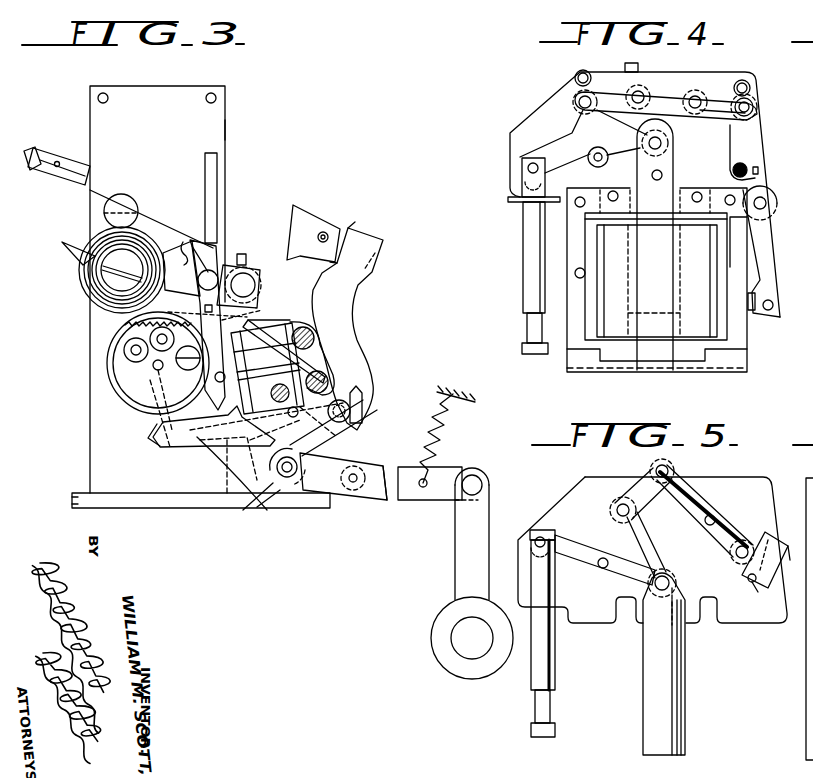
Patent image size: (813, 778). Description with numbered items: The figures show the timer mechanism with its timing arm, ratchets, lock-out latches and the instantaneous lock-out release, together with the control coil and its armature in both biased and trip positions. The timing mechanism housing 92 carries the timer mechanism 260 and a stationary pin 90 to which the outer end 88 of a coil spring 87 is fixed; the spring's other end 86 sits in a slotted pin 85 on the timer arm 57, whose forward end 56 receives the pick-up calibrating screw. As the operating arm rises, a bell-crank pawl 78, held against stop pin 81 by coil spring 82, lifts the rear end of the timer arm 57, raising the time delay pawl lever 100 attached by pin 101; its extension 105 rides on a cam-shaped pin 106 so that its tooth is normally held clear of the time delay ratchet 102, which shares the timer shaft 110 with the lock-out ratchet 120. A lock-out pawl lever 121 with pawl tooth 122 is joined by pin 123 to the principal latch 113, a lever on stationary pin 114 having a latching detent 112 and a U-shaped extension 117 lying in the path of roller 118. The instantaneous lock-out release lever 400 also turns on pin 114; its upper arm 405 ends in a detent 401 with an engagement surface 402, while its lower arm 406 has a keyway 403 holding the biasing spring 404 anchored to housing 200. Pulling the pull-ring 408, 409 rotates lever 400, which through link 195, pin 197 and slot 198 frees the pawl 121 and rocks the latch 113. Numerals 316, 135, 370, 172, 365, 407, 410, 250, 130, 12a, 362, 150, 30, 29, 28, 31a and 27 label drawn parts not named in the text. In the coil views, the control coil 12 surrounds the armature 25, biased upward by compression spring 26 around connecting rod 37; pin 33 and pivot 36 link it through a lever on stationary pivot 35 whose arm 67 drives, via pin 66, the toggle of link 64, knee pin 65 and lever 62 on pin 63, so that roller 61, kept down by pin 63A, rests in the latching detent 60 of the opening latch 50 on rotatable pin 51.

In FIG. 3, the timing mechanism housing 92 is at (168, 76).
In FIG. 3, the timer mechanism 260 is at (234, 116).
In FIG. 3, the slot 316 is at (214, 170).
In FIG. 3, the handle 135 is at (62, 153).
In FIG. 3, the stationary pin 90 is at (126, 200).
In FIG. 3, the outer end of coil spring 88 is at (104, 213).
In FIG. 3, the forward end of timer arm 56 is at (62, 243).
In FIG. 3, the coil spring 87 is at (80, 274).
In FIG. 3, the end of coil spring 86 is at (118, 276).
In FIG. 3, the slotted pin 85 is at (124, 286).
In FIG. 3, the timer arm 57 is at (190, 283).
In FIG. 3, the stationary pin 63 is at (175, 246).
In FIG. 4, the stationary pin 63 is at (696, 97).
In FIG. 5, the stationary pin 63 is at (716, 520).
In FIG. 3, the time delay pawl lever 100 is at (208, 243).
In FIG. 3, the pin 101 is at (216, 262).
In FIG. 3, the stud 370 is at (248, 257).
In FIG. 3, the detent 401 is at (206, 307).
In FIG. 3, the time delay toothed ratchet 102 is at (130, 327).
In FIG. 3, the lock-out ratchet 120 is at (110, 364).
In FIG. 3, the timer shaft 110 is at (155, 367).
In FIG. 3, the pin 106 is at (176, 400).
In FIG. 3, the pawl tooth 122 is at (160, 421).
In FIG. 3, the lock-out pawl lever 121 is at (158, 443).
In FIG. 3, the upper arm 405 is at (219, 473).
In FIG. 3, the base bar 172 is at (124, 507).
In FIG. 3, the lever 365 is at (262, 492).
In FIG. 3, the pivot 407 is at (284, 480).
In FIG. 3, the stationary pin 114 is at (289, 474).
In FIG. 3, the link 195 is at (338, 462).
In FIG. 3, the instantaneous lock-out release lever 400 is at (361, 511).
In FIG. 3, the lower arm 406 is at (384, 500).
In FIG. 3, the hole or keyway 403 is at (414, 500).
In FIG. 3, the biasing spring 404 is at (452, 418).
In FIG. 3, the housing 200 is at (478, 382).
In FIG. 3, the pivot 410 is at (474, 478).
In FIG. 3, the pull-ring 408 is at (457, 555).
In FIG. 3, the pull-ring 409 is at (452, 640).
In FIG. 3, the pin 123 is at (352, 408).
In FIG. 3, the U-shaped extension 117 is at (305, 212).
In FIG. 3, the lever assembly 250 is at (355, 222).
In FIG. 3, the latching detent 112 is at (322, 273).
In FIG. 3, the principal latch 113 is at (356, 308).
In FIG. 3, the roller 118 is at (260, 288).
In FIG. 3, the engagement surface 402 is at (260, 305).
In FIG. 3, the pawl 78 is at (274, 326).
In FIG. 3, the compression spring 26 is at (314, 337).
In FIG. 3, the coil spring 82 is at (325, 362).
In FIG. 3, the stop pin 81 is at (328, 382).
In FIG. 3, the block 130 is at (268, 358).
In FIG. 3, the extension 105 is at (269, 371).
In FIG. 3, the pin 12a is at (271, 391).
In FIG. 3, the slot 198 is at (288, 410).
In FIG. 3, the pin 197 is at (275, 425).
In FIG. 4, the frame 362 is at (552, 141).
In FIG. 5, the frame 362 is at (574, 494).
In FIG. 4, the upwardly extending arm 67 is at (585, 123).
In FIG. 4, the link 64 is at (604, 92).
In FIG. 4, the tab 150 is at (638, 65).
In FIG. 4, the pin 66 is at (580, 99).
In FIG. 5, the pin 66 is at (617, 509).
In FIG. 4, the knee pin 65 is at (641, 96).
In FIG. 5, the knee pin 65 is at (670, 470).
In FIG. 4, the lever 62 is at (715, 104).
In FIG. 5, the lever 62 is at (700, 503).
In FIG. 4, the pin 63A is at (750, 88).
In FIG. 4, the roller 61 is at (756, 108).
In FIG. 5, the roller 61 is at (745, 545).
In FIG. 4, the opening latch 50 is at (744, 140).
In FIG. 5, the opening latch 50 is at (790, 548).
In FIG. 4, the rotatable pin 51 is at (752, 166).
In FIG. 5, the rotatable pin 51 is at (748, 590).
In FIG. 4, the boss 30 is at (766, 190).
In FIG. 4, the pivot 29 is at (769, 203).
In FIG. 4, the plate 28 is at (776, 245).
In FIG. 4, the stop 31a is at (752, 312).
In FIG. 4, the connecting rod 37 is at (526, 276).
In FIG. 5, the connecting rod 37 is at (555, 662).
In FIG. 4, the stationary pivot 35 is at (602, 166).
In FIG. 4, the pin 33 is at (664, 142).
In FIG. 5, the pin 33 is at (670, 580).
In FIG. 4, the armature 25 is at (668, 166).
In FIG. 5, the armature 25 is at (686, 678).
In FIG. 4, the base plate 27 is at (577, 342).
In FIG. 4, the control coil 12 is at (704, 304).
In FIG. 5, the pivot 36 is at (536, 538).
In FIG. 5, the latching detent 60 is at (742, 571).